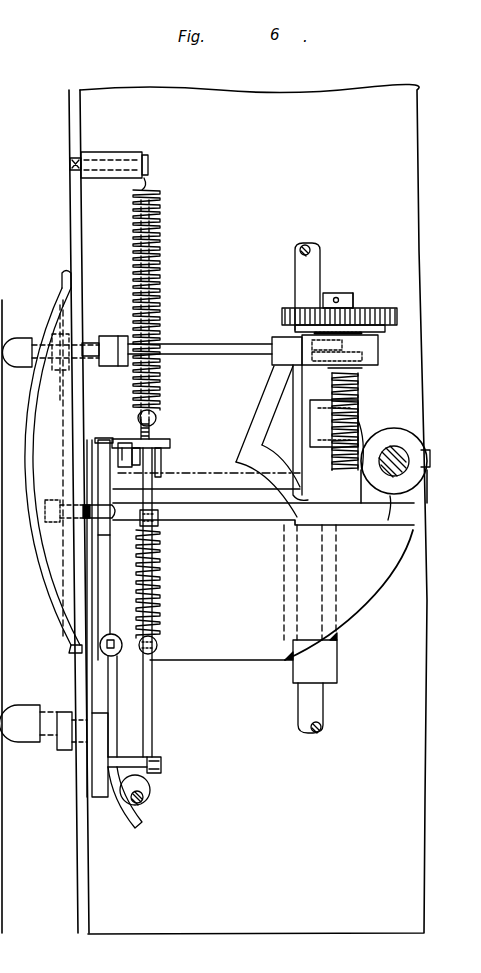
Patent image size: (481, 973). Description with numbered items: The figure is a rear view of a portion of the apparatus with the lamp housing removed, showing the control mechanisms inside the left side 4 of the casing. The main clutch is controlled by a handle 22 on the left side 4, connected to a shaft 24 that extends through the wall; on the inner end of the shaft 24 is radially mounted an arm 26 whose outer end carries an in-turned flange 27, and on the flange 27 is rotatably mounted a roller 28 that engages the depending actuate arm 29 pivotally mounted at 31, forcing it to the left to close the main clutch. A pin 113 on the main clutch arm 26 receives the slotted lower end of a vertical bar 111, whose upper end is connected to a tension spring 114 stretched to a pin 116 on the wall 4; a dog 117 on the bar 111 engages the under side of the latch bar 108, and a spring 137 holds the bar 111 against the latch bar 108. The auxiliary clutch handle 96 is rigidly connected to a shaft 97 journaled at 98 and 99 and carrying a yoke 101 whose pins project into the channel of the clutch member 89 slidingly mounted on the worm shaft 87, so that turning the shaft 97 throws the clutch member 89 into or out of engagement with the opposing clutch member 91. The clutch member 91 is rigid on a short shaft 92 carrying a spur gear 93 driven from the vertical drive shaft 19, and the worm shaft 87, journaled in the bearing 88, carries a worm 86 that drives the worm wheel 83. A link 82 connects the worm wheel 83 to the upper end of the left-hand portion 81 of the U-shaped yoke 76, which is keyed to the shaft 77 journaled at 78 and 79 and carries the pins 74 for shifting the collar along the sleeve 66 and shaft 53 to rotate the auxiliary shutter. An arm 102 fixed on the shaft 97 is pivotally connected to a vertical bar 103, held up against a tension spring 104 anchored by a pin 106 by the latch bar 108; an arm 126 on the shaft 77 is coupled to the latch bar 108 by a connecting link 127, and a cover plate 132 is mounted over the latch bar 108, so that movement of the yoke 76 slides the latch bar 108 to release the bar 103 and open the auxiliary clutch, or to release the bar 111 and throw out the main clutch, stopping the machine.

The left side 4 is at (0, 172).
The pin 116 is at (110, 150).
The tension spring 114 is at (160, 230).
The vertical bar 103 is at (158, 372).
The arm 102 is at (118, 335).
The shaft 97 is at (213, 350).
The journal 98 is at (86, 352).
The clutch handle 96 is at (18, 345).
The journal 79 is at (65, 522).
The latch bar 108 is at (118, 457).
The spring 137 is at (141, 468).
The connecting link 127 is at (125, 446).
The cover plate 132 is at (158, 418).
The vertical bar 111 is at (165, 441).
The dog 117 is at (161, 460).
The arm 126 is at (115, 492).
The shaft 77 is at (208, 521).
The tension spring 104 is at (162, 588).
The pin 106 is at (158, 644).
The pivot 31 is at (100, 650).
The actuate arm 29 is at (118, 683).
The arm 26 is at (100, 762).
The handle 22 is at (32, 724).
The shaft 24 is at (70, 752).
The pin 113 is at (163, 758).
The roller 28 is at (152, 797).
The flange 27 is at (102, 800).
The vertical shaft 19 is at (304, 246).
The spur gear 93 is at (370, 308).
The clutch member 91 is at (338, 293).
The short shaft 92 is at (328, 292).
The yoke 101 is at (378, 338).
The journal 99 is at (282, 345).
The clutch member 89 is at (320, 362).
The worm wheel 83 is at (300, 448).
The bearing 88 is at (360, 407).
The worm shaft 87 is at (356, 380).
The worm 86 is at (315, 412).
The left-hand portion 81 is at (360, 435).
The shaft 53 is at (400, 446).
The pins 74 is at (362, 525).
The sleeve 66 is at (388, 525).
The U-shaped yoke member 76 is at (412, 540).
The journal 78 is at (290, 530).
The link 82 is at (322, 527).